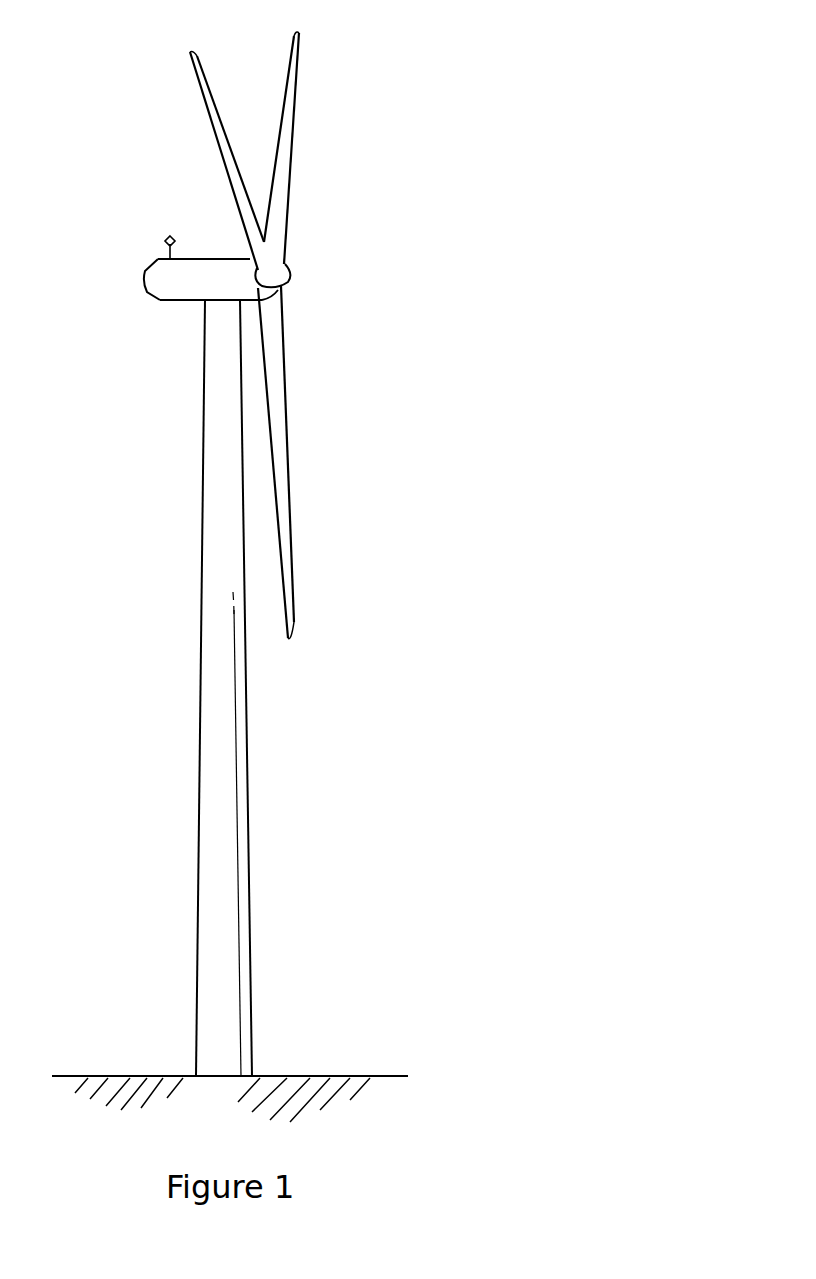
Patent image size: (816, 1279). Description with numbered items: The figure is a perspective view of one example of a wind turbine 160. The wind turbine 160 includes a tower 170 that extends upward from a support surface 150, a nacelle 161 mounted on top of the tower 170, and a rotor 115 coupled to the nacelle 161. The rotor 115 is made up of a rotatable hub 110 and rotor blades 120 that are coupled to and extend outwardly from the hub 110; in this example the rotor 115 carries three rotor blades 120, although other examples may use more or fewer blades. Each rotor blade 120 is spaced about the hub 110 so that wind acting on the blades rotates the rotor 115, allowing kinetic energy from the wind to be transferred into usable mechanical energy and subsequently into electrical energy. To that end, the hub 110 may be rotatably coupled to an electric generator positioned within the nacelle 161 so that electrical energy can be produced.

The wind turbine 160 is at (405, 110).
The tower 170 is at (208, 795).
The nacelle 161 is at (182, 302).
The hub 110 is at (290, 280).
The rotor 115 is at (298, 260).
The rotor blade 120 is at (230, 140).
The support surface 150 is at (128, 1076).